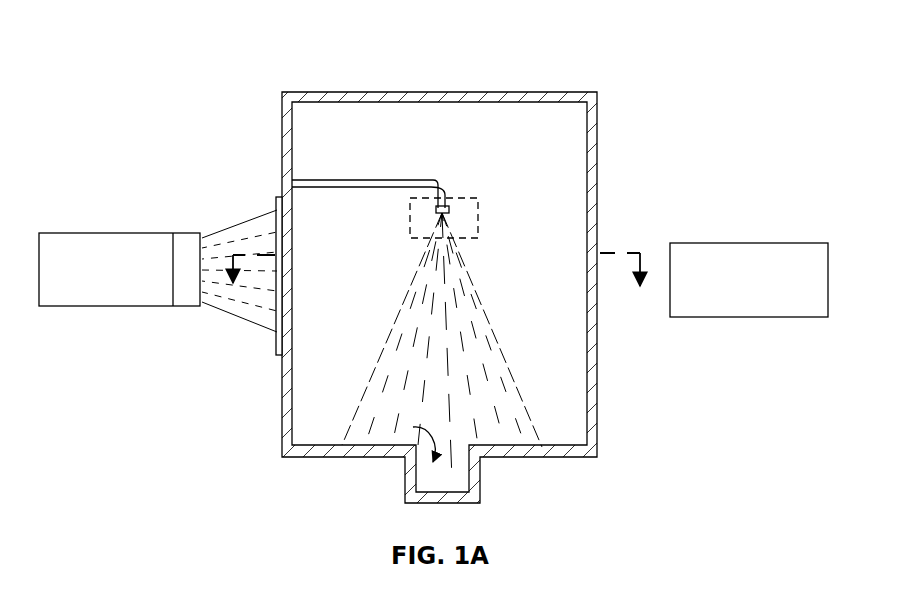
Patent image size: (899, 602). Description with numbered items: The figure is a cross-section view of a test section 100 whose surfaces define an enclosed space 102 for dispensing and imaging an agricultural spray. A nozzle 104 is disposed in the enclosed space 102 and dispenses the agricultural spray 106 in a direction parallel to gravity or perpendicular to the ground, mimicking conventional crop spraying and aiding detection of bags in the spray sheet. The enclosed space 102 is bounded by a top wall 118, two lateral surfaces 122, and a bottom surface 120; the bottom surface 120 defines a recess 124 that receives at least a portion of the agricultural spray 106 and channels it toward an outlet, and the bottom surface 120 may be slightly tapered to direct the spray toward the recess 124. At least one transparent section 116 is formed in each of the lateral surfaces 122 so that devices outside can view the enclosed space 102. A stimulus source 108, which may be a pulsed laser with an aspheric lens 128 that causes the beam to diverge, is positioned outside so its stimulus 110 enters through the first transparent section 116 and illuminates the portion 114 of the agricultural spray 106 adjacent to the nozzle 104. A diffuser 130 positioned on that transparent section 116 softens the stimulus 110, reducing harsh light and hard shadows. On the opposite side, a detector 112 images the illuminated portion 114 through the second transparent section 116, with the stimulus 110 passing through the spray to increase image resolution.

The test section 100 is at (440, 259).
The enclosed space 102 is at (429, 277).
The nozzle 104 is at (452, 208).
The agricultural spray 106 is at (475, 282).
The stimulus source 108 is at (85, 233).
The stimulus 110 is at (228, 227).
The detector 112 is at (710, 243).
The portion of the agricultural spray 114 is at (410, 223).
The transparent section 116 is at (282, 180).
The top wall 118 is at (500, 93).
The bottom surface 120 is at (530, 457).
The lateral surfaces 122 is at (282, 410).
The recess 124 is at (413, 427).
The aspheric lens 128 is at (183, 233).
The diffuser 130 is at (278, 198).